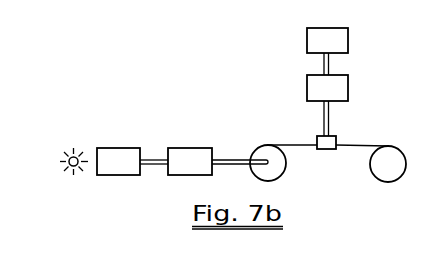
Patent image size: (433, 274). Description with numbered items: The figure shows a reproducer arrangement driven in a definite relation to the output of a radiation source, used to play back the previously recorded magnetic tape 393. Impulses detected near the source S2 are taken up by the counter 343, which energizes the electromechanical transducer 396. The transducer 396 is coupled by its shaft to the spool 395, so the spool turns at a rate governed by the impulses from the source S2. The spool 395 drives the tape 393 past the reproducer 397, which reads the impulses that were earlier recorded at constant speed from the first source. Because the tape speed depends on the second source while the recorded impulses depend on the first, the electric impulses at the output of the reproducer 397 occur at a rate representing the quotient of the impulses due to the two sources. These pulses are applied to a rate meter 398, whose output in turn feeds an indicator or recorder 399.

The radiation source S2 is at (64, 170).
The counter 343 is at (118, 161).
The electromechanical transducer 396 is at (190, 161).
The spool 395 is at (270, 148).
The magnetic tape 393 is at (337, 165).
The reproducer 397 is at (348, 134).
The rate meter 398 is at (327, 88).
The indicator or recorder 399 is at (327, 40).